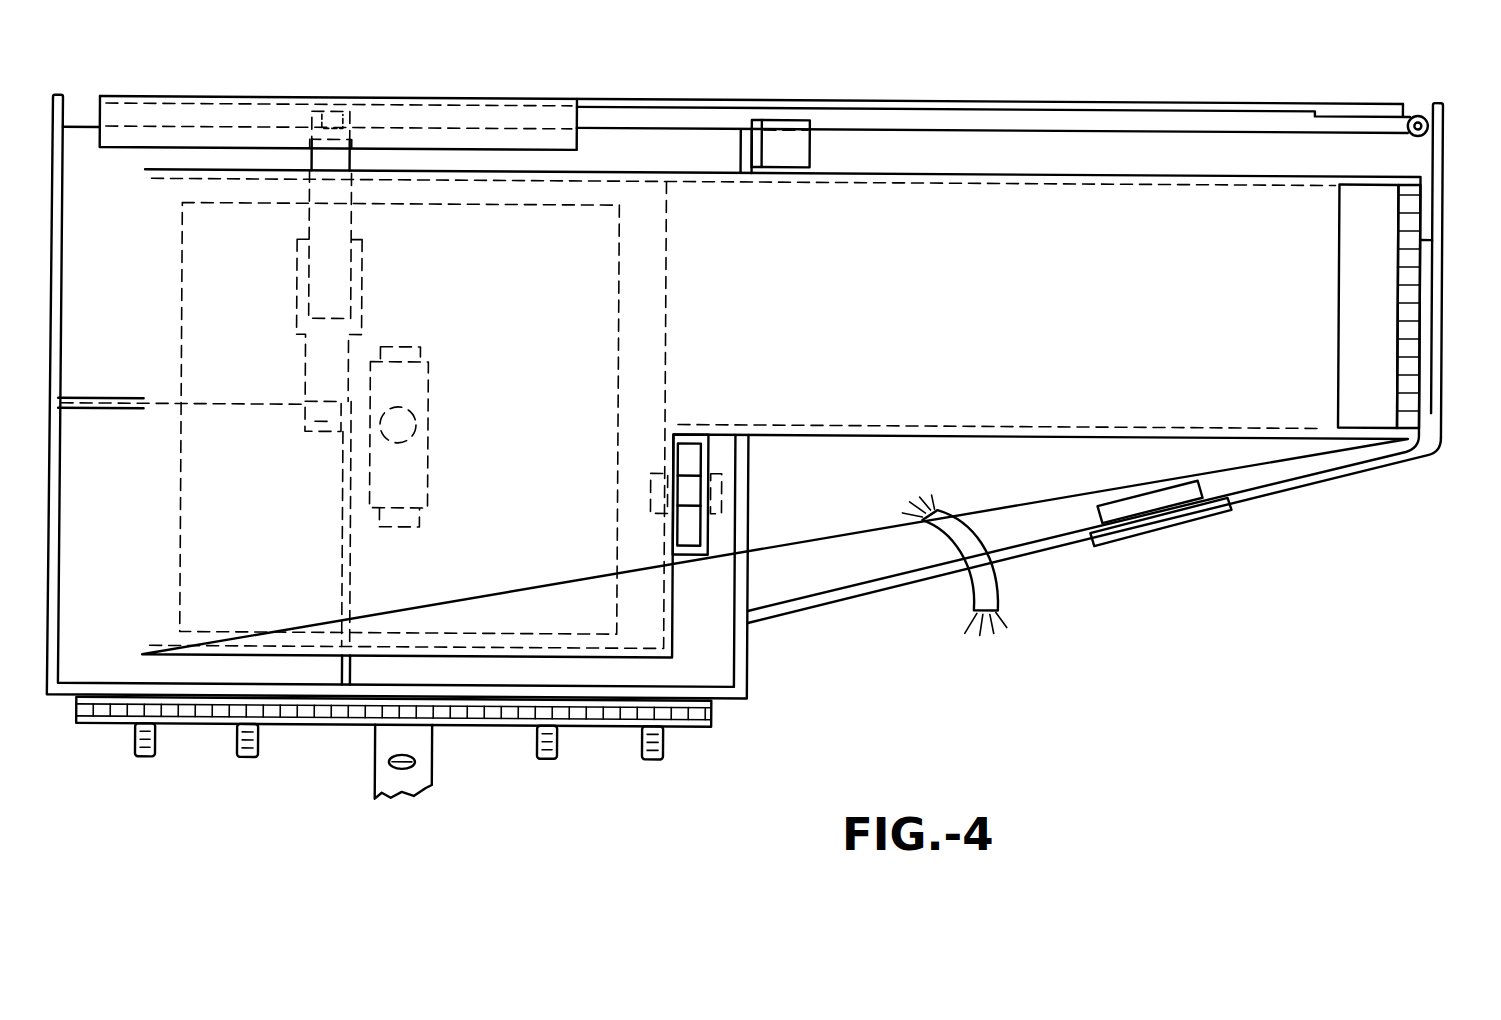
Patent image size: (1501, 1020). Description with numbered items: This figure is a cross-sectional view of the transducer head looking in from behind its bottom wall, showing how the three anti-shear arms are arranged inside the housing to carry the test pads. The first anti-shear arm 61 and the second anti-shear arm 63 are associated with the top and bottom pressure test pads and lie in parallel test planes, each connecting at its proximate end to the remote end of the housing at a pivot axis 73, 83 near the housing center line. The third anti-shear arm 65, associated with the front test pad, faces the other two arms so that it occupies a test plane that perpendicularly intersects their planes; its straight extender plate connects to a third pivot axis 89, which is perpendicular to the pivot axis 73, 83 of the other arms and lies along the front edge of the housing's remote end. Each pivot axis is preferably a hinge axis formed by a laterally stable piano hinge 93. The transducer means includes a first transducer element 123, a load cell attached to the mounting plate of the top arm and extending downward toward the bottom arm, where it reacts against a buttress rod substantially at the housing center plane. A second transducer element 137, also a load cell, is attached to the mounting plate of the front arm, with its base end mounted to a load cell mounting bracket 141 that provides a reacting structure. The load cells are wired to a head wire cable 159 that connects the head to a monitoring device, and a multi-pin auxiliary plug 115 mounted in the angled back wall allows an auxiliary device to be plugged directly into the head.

The third anti-shear arm 65 is at (966, 92).
The piano hinge 93 is at (1377, 108).
The third pivot axis 89 is at (1430, 123).
The first anti-shear arm 61 is at (792, 415).
The second anti-shear arm 63 is at (992, 402).
The pivot axis 73 is at (1413, 343).
The pivot axis 83 is at (1412, 396).
The multi-pin auxiliary plug 115 is at (1144, 520).
The head wire cable 159 is at (1005, 588).
The second transducer element 137 is at (334, 225).
The first transducer element 123 is at (415, 390).
The load cell mounting bracket 141 is at (226, 406).